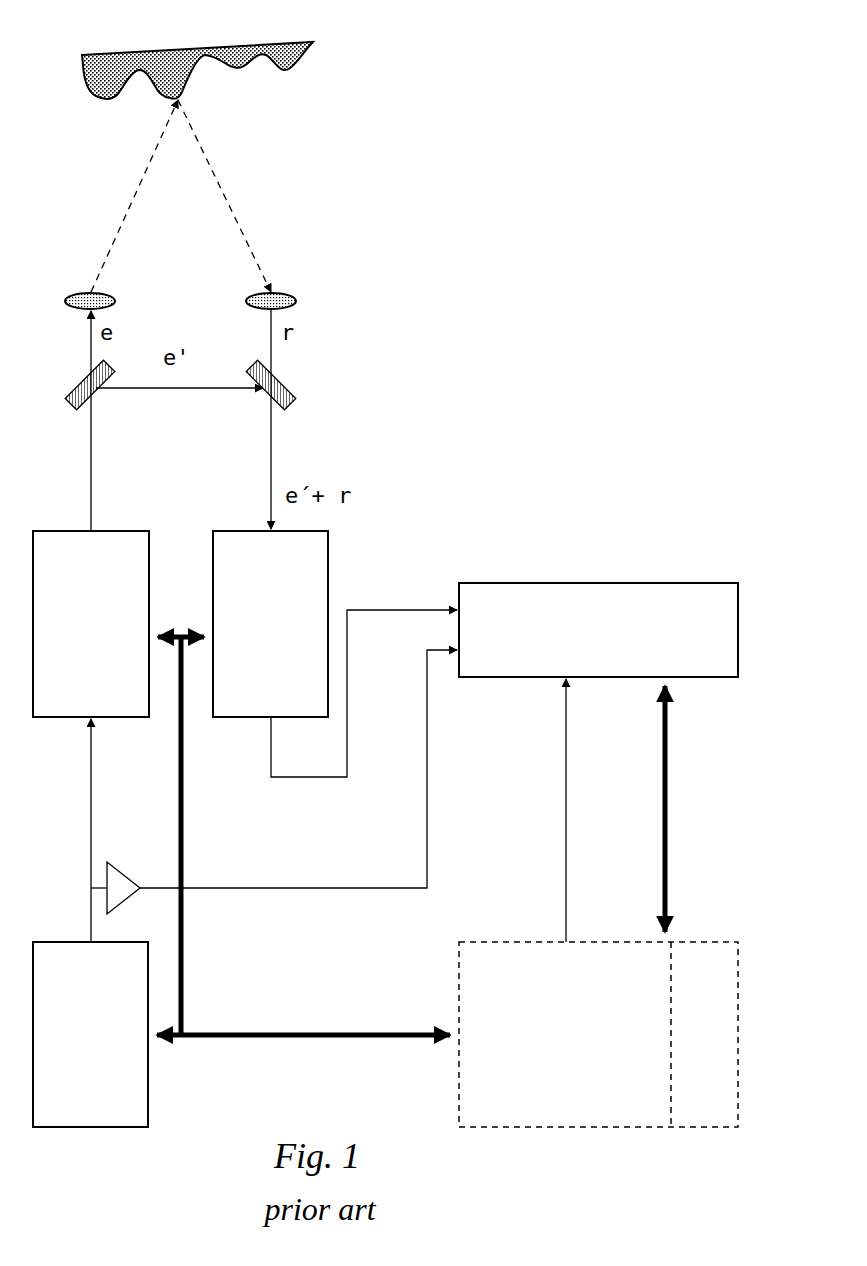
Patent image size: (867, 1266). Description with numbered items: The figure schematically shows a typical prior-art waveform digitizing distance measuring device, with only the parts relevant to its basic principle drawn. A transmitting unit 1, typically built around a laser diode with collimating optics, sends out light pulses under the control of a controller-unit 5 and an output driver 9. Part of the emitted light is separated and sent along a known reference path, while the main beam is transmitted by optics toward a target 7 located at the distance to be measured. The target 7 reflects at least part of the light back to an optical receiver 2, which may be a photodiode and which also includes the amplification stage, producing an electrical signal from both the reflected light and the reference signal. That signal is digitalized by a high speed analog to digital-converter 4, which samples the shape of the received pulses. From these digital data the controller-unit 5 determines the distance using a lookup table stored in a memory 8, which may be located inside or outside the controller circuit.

The transmitting unit 1 is at (91, 624).
The optical receiver 2 is at (270, 624).
The analog to digital-converter 4 is at (598, 630).
The controller-unit 5 is at (598, 1034).
The target 7 is at (247, 64).
The memory 8 is at (692, 1034).
The output driver 9 is at (90, 1034).